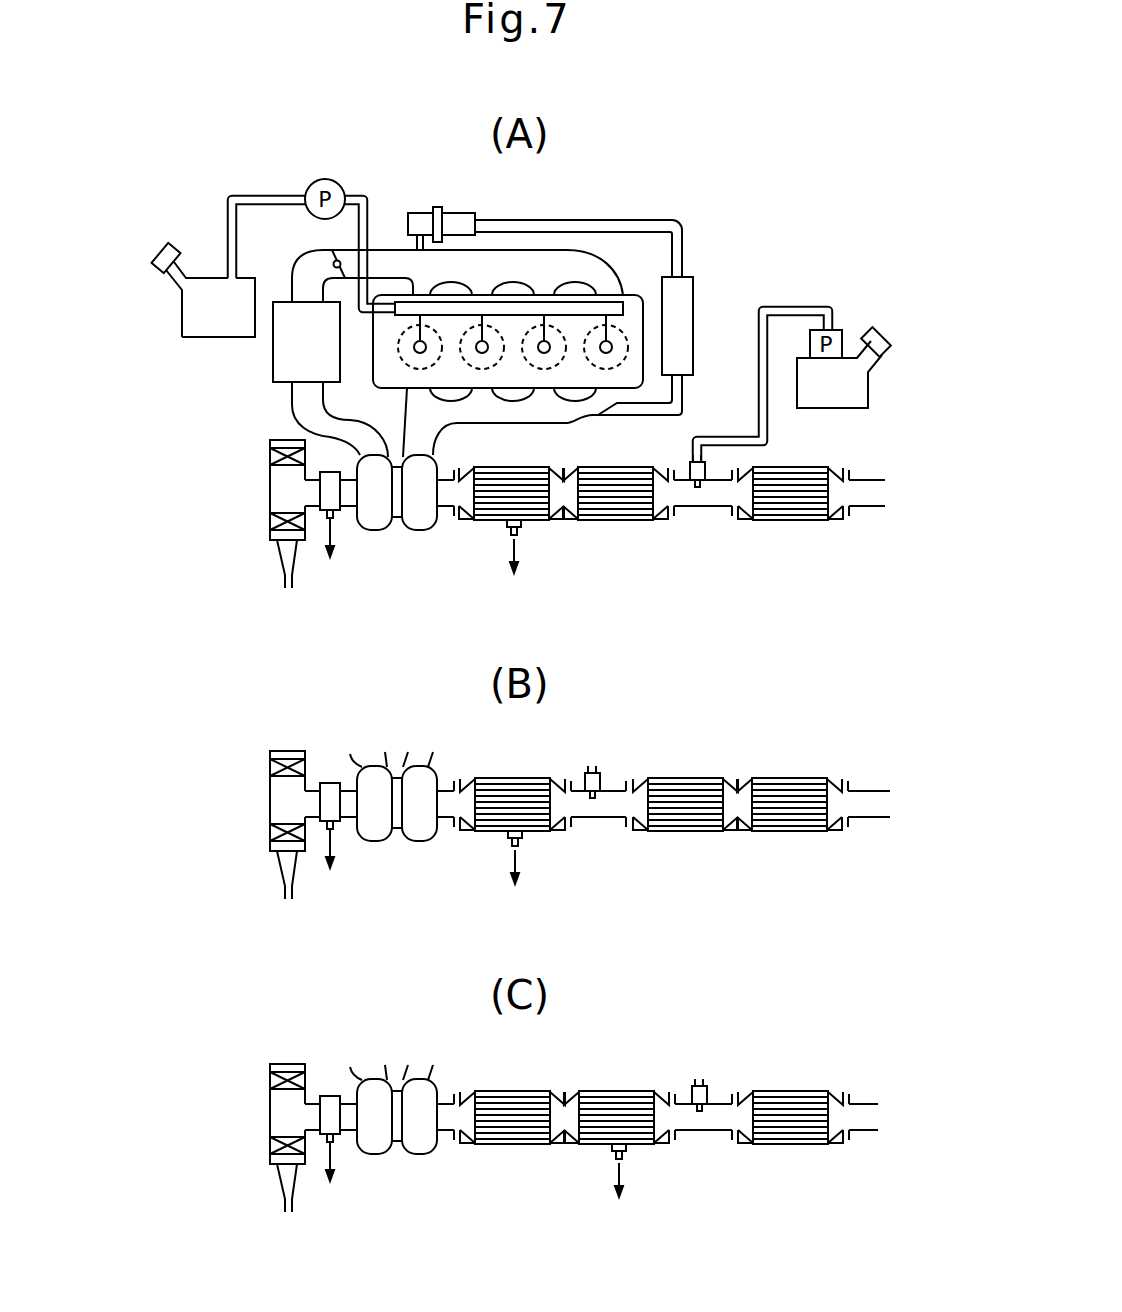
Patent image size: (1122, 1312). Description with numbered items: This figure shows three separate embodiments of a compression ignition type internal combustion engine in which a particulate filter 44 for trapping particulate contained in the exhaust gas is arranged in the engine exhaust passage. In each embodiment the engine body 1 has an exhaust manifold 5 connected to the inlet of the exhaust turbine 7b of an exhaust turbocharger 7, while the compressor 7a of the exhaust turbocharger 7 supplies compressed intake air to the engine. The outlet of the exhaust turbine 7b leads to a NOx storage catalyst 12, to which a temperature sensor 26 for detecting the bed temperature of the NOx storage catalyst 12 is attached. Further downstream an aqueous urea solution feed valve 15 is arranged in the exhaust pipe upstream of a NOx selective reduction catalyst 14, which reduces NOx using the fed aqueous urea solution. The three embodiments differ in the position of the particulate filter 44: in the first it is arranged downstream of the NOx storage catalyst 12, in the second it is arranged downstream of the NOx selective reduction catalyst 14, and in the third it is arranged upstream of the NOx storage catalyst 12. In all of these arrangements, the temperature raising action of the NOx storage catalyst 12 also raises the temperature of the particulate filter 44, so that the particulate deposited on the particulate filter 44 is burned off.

The engine body 1 is at (628, 283).
The exhaust manifold 5 is at (487, 413).
The exhaust turbocharger 7 is at (387, 848).
The compressor 7a is at (372, 524).
The exhaust turbine 7b is at (423, 522).
The NOx storage catalyst 12 is at (493, 516).
The NOx selective reduction catalyst 14 is at (793, 521).
The aqueous urea solution feed valve 15 is at (703, 473).
The temperature sensor 26 is at (522, 533).
The particulate filter 44 is at (615, 521).